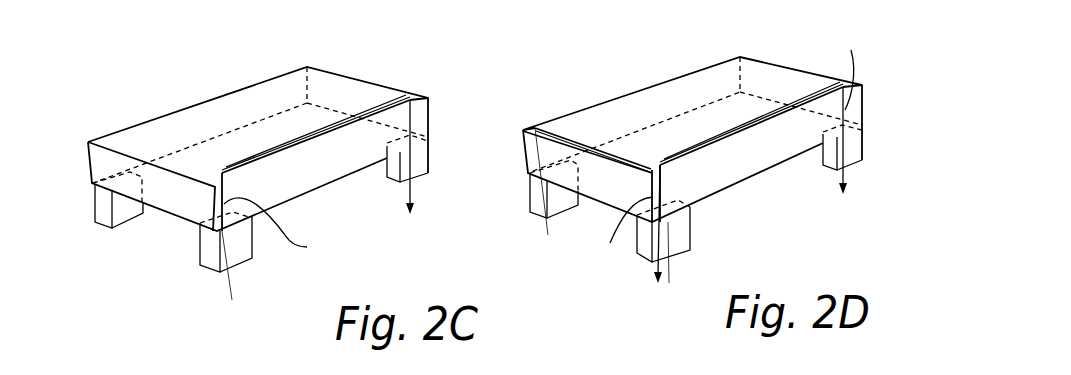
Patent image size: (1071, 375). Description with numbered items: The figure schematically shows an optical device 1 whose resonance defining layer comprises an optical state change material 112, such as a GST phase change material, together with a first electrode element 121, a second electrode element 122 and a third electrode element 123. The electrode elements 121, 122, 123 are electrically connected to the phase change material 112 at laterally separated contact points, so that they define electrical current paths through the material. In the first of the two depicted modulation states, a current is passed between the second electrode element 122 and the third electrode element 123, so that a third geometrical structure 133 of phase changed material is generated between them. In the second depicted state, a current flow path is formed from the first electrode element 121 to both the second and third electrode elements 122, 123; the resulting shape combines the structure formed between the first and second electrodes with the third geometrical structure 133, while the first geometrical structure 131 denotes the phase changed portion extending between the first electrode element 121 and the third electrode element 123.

In FIG. 2C, the optical device 1 is at (158, 70).
In FIG. 2D, the optical device 1 is at (633, 58).
In FIG. 2C, the optical state change material 112 is at (90, 187).
In FIG. 2D, the optical state change material 112 is at (522, 155).
In FIG. 2C, the first electrode element 121 is at (120, 207).
In FIG. 2D, the first electrode element 121 is at (558, 195).
In FIG. 2C, the second electrode element 122 is at (233, 247).
In FIG. 2D, the second electrode element 122 is at (673, 241).
In FIG. 2C, the third electrode element 123 is at (418, 160).
In FIG. 2D, the third electrode element 123 is at (850, 152).
In FIG. 2D, the first geometrical structure 131 is at (584, 150).
In FIG. 2C, the third geometrical structure 133 is at (378, 112).
In FIG. 2D, the third geometrical structure 133 is at (803, 97).